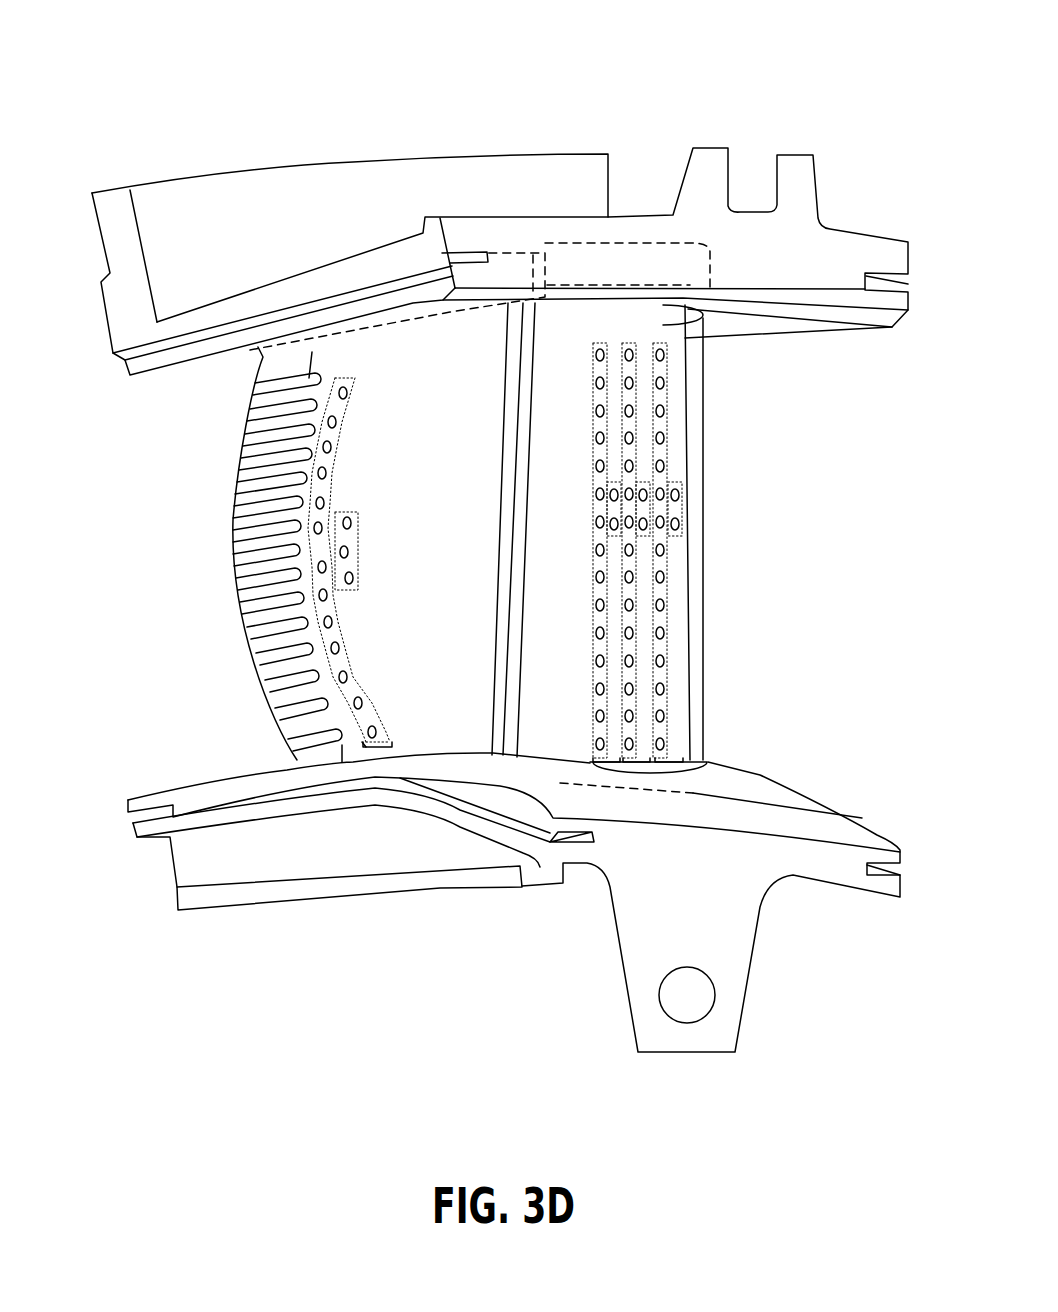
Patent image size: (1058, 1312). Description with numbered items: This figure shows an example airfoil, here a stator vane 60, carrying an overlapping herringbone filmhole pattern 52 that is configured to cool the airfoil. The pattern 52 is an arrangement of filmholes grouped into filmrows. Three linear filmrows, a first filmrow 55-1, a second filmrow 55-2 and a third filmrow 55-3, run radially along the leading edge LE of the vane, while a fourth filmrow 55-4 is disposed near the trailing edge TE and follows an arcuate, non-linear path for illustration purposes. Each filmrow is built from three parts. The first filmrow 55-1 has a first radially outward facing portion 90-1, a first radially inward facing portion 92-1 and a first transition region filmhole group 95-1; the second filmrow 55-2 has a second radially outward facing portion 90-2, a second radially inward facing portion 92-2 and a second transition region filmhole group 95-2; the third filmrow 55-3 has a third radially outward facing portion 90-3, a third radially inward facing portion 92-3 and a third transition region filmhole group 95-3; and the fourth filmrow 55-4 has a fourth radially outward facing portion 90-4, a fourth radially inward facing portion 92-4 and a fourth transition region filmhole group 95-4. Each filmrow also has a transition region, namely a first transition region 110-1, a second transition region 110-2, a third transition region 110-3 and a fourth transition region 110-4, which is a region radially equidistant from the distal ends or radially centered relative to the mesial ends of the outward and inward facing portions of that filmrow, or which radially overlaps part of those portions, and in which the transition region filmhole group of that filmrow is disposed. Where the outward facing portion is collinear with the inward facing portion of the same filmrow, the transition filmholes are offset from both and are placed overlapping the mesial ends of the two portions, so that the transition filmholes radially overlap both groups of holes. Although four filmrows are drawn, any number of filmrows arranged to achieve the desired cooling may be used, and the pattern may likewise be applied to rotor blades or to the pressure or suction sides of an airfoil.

The stator vane 60 is at (521, 228).
The overlapping herringbone filmhole pattern 52 is at (471, 538).
The first radially inward facing portion 92-1 is at (618, 487).
The second radially inward facing portion 92-2 is at (648, 487).
The third radially inward facing portion 92-3 is at (665, 343).
The fourth radially inward facing portion 92-4 is at (340, 378).
The first transition region filmhole group 95-1 is at (599, 343).
The second transition region filmhole group 95-2 is at (632, 343).
The third transition region filmhole group 95-3 is at (672, 488).
The fourth transition region filmhole group 95-4 is at (343, 506).
The first transition region 110-1 is at (590, 502).
The second transition region 110-2 is at (619, 516).
The third transition region 110-3 is at (643, 516).
The fourth transition region 110-4 is at (310, 544).
The first radially outward facing portion 90-1 is at (593, 700).
The second radially outward facing portion 90-2 is at (602, 745).
The third radially outward facing portion 90-3 is at (670, 747).
The fourth radially outward facing portion 90-4 is at (350, 662).
The first filmrow 55-1 is at (608, 763).
The second filmrow 55-2 is at (640, 763).
The third filmrow 55-3 is at (672, 763).
The fourth filmrow 55-4 is at (380, 749).
The trailing edge TE is at (252, 554).
The leading edge LE is at (757, 532).